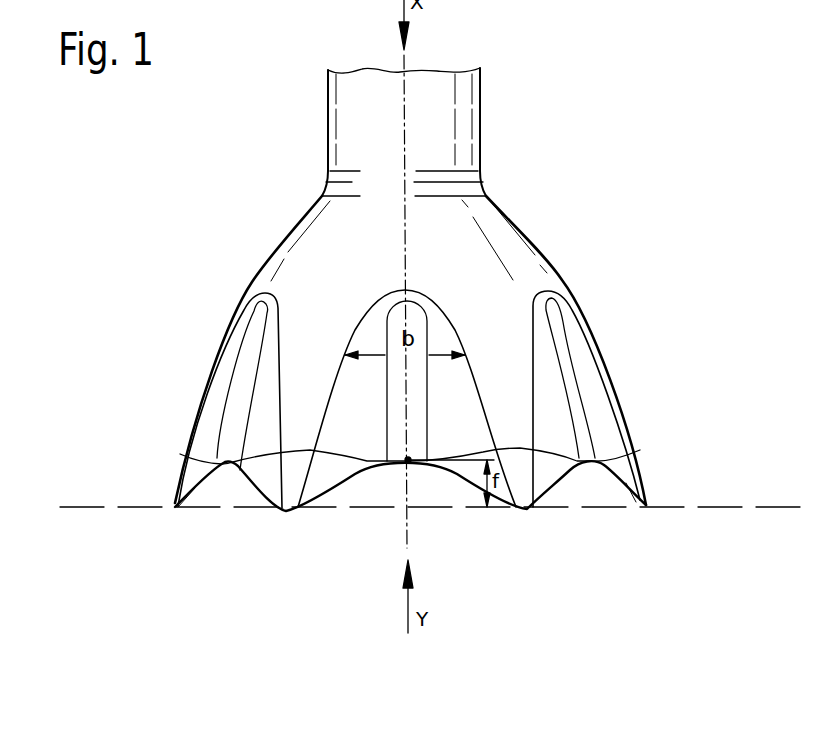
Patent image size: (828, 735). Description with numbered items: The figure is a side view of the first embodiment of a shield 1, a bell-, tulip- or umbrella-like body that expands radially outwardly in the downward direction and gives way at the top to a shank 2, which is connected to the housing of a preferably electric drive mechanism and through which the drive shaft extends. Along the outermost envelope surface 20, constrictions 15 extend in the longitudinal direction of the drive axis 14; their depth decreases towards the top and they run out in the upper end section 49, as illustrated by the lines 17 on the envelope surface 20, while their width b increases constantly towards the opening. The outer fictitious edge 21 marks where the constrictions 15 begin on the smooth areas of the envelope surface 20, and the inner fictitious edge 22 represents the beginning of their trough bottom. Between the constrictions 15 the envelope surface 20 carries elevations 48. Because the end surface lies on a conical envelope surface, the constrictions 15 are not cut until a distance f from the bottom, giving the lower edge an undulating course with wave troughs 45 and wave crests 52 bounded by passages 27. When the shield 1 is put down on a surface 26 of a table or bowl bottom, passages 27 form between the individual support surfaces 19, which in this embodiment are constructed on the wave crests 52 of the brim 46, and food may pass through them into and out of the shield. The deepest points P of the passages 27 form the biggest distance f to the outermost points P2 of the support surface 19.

The shield 1 is at (212, 353).
The shank 2 is at (463, 103).
The drive axis 14 is at (403, 115).
The constrictions 15 is at (578, 420).
The lines 17 is at (450, 318).
The support surface 19 is at (641, 505).
The envelope surface 20 is at (497, 319).
The outer fictitious edge 21 is at (483, 393).
The inner fictitious edge 22 is at (387, 412).
The surface 26 is at (72, 511).
The passages 27 is at (590, 493).
The wave troughs 45 is at (231, 492).
The brim 46 is at (285, 511).
The elevations 48 is at (643, 468).
The upper end section 49 is at (320, 297).
The wave crests 52 is at (527, 507).
The deepest points P is at (407, 462).
The outermost points P2 is at (173, 510).